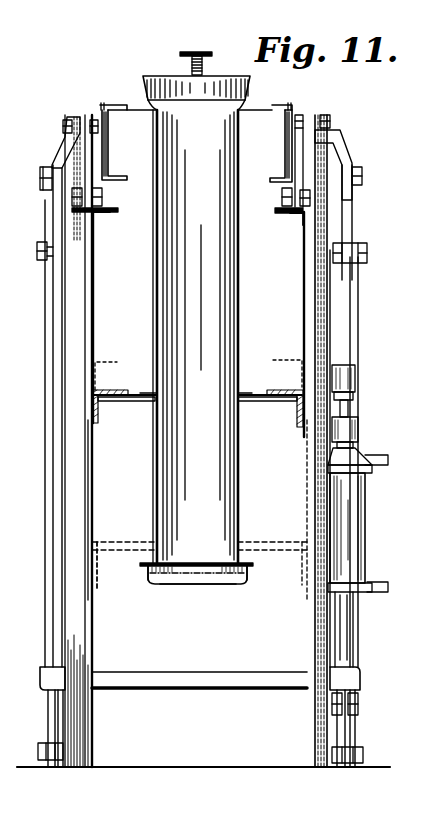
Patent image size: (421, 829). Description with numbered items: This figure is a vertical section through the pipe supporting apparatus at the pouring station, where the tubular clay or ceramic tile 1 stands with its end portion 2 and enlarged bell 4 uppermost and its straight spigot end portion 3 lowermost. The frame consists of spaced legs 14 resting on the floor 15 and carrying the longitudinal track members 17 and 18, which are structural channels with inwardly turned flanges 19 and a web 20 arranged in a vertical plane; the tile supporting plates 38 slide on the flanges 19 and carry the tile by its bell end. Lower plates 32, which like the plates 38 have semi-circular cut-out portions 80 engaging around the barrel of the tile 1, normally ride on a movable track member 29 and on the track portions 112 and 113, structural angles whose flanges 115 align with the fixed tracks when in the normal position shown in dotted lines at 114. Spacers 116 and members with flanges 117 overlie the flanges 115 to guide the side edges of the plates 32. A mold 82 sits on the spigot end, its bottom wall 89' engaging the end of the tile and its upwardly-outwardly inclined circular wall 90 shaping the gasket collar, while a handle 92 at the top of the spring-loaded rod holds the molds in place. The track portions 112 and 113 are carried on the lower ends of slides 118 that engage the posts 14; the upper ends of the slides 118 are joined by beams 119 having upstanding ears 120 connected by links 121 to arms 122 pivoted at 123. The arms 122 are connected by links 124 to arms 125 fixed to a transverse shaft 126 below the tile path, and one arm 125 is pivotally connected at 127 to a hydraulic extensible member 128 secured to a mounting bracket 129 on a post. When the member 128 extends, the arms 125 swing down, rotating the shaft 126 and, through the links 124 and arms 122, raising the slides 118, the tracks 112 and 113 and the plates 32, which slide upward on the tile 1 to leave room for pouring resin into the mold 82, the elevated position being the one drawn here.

The tubular clay or ceramic tile 1 is at (236, 293).
The end portion 2 is at (246, 95).
The end portion 3 is at (196, 557).
The enlarged bell 4 is at (152, 105).
The legs 14 is at (85, 748).
The floor 15 is at (305, 766).
The longitudinal track member 17 is at (108, 160).
The longitudinal track member 18 is at (283, 152).
The flanges 19 is at (278, 116).
The web 20 is at (110, 130).
The movable track member 29 is at (273, 401).
The plates 32 is at (145, 393).
The tile supporting plates 38 is at (153, 113).
The semi-circular cut-out portions 80 is at (236, 383).
The mold 82 is at (245, 581).
The bottom wall 89' is at (198, 597).
The circular wall 90 is at (143, 568).
The handle 92 is at (184, 53).
The track portion 112 is at (100, 418).
The track portion 113 is at (296, 405).
The normal position 114 is at (102, 565).
The flanges 115 is at (140, 401).
The spacers 116 is at (112, 388).
The flanges 117 is at (273, 385).
The slides 118 is at (90, 318).
The beams 119 is at (97, 220).
The ears 120 is at (95, 208).
The links 121 is at (312, 153).
The arms 122 is at (63, 148).
The pivot 123 is at (43, 193).
The links 124 is at (356, 324).
The arms 125 is at (55, 712).
The shaft 126 is at (185, 681).
The pivotal connection 127 is at (358, 702).
The hydraulic extensible member 128 is at (360, 512).
The mounting bracket 129 is at (357, 387).